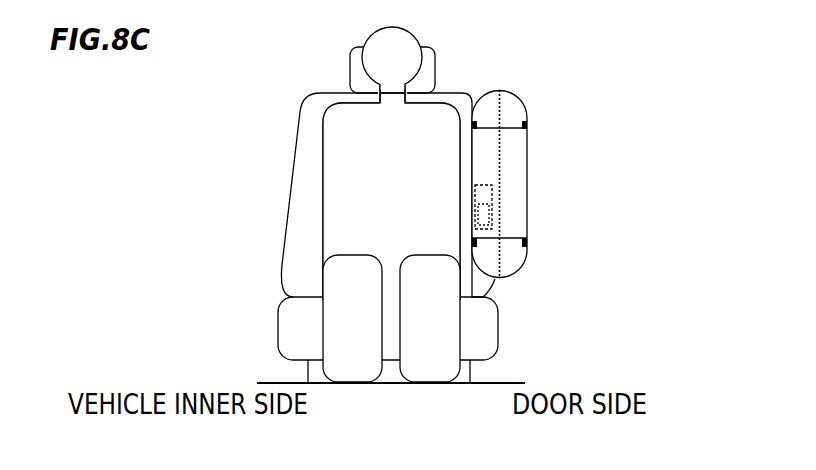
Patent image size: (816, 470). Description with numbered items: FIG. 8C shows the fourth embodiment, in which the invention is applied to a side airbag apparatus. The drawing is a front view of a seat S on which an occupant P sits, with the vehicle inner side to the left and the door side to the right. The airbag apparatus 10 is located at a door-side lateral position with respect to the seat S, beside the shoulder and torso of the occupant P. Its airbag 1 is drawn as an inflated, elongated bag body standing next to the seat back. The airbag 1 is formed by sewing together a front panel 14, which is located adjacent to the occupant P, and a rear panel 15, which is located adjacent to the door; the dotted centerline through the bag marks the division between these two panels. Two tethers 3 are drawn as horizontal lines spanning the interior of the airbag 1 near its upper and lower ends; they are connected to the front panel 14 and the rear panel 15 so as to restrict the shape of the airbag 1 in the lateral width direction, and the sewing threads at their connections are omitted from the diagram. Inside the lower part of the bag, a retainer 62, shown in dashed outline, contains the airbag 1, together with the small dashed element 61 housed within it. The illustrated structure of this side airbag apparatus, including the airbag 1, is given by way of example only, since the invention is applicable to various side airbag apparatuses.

The airbag 1 is at (530, 103).
The tethers 3 is at (511, 131).
The airbag device 10 is at (517, 166).
The front panel 14 is at (483, 90).
The rear panel 15 is at (516, 90).
The inflator 61 is at (479, 216).
The retainer 62 is at (476, 190).
The seat S is at (290, 170).
The occupant P is at (398, 64).